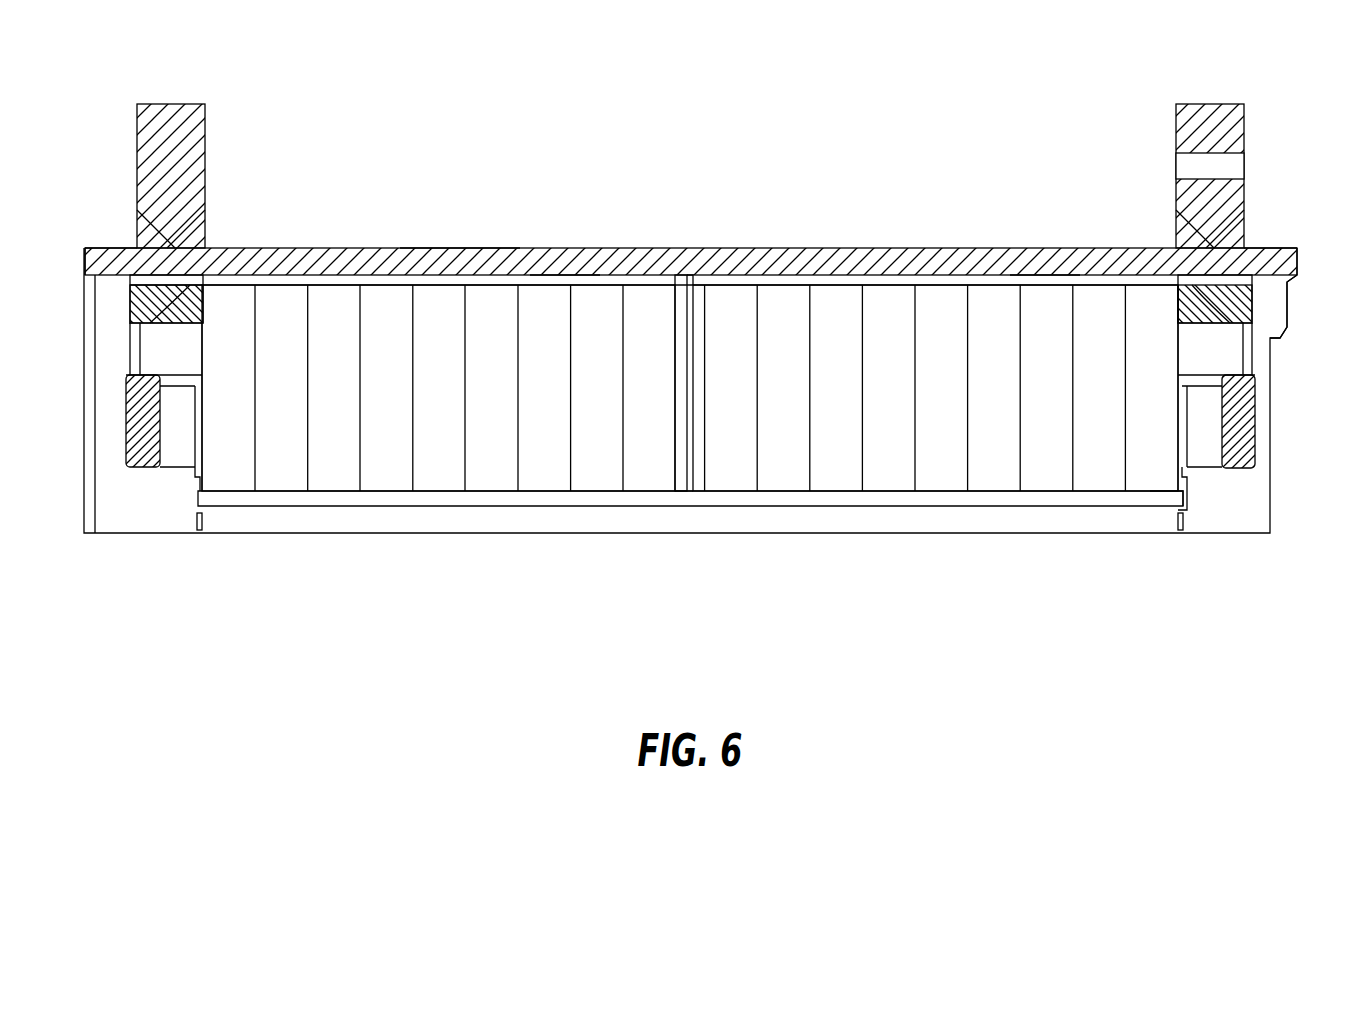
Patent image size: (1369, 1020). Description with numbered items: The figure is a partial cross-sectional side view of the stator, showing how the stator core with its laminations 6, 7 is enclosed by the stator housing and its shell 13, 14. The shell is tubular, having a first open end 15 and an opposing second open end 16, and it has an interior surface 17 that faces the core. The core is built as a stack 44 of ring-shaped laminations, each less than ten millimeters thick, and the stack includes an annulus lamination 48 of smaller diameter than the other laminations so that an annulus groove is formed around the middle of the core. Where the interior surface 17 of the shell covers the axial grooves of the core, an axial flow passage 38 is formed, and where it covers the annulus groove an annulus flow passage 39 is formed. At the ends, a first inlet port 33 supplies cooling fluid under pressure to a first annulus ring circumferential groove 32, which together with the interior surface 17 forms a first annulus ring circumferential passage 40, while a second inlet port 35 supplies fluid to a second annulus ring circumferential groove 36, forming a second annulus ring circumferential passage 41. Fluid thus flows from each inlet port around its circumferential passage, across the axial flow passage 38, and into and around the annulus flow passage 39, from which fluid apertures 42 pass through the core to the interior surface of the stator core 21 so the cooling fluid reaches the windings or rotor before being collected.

The rotor / shaft 6, 7 is at (1153, 480).
The stator yoke / back iron 13, 14 is at (988, 265).
The first open end 15 is at (100, 248).
The second open end 16 is at (1297, 278).
The interior surface of the shell 17 is at (458, 273).
The interior surface of the stator core 21 is at (968, 491).
The first annulus ring circumferential groove 32 is at (167, 297).
The first inlet port 33 is at (172, 196).
The second inlet port 35 is at (1218, 208).
The second annulus ring circumferential groove 36 is at (1250, 317).
The axial flow passage 38 is at (560, 277).
The annulus flow passage 39 is at (690, 278).
The first annulus ring circumferential passage 40 is at (167, 281).
The second annulus ring circumferential passage 41 is at (1217, 283).
The fluid aperture 42 is at (690, 345).
The stack 44 is at (384, 508).
The annulus lamination 48 is at (680, 476).